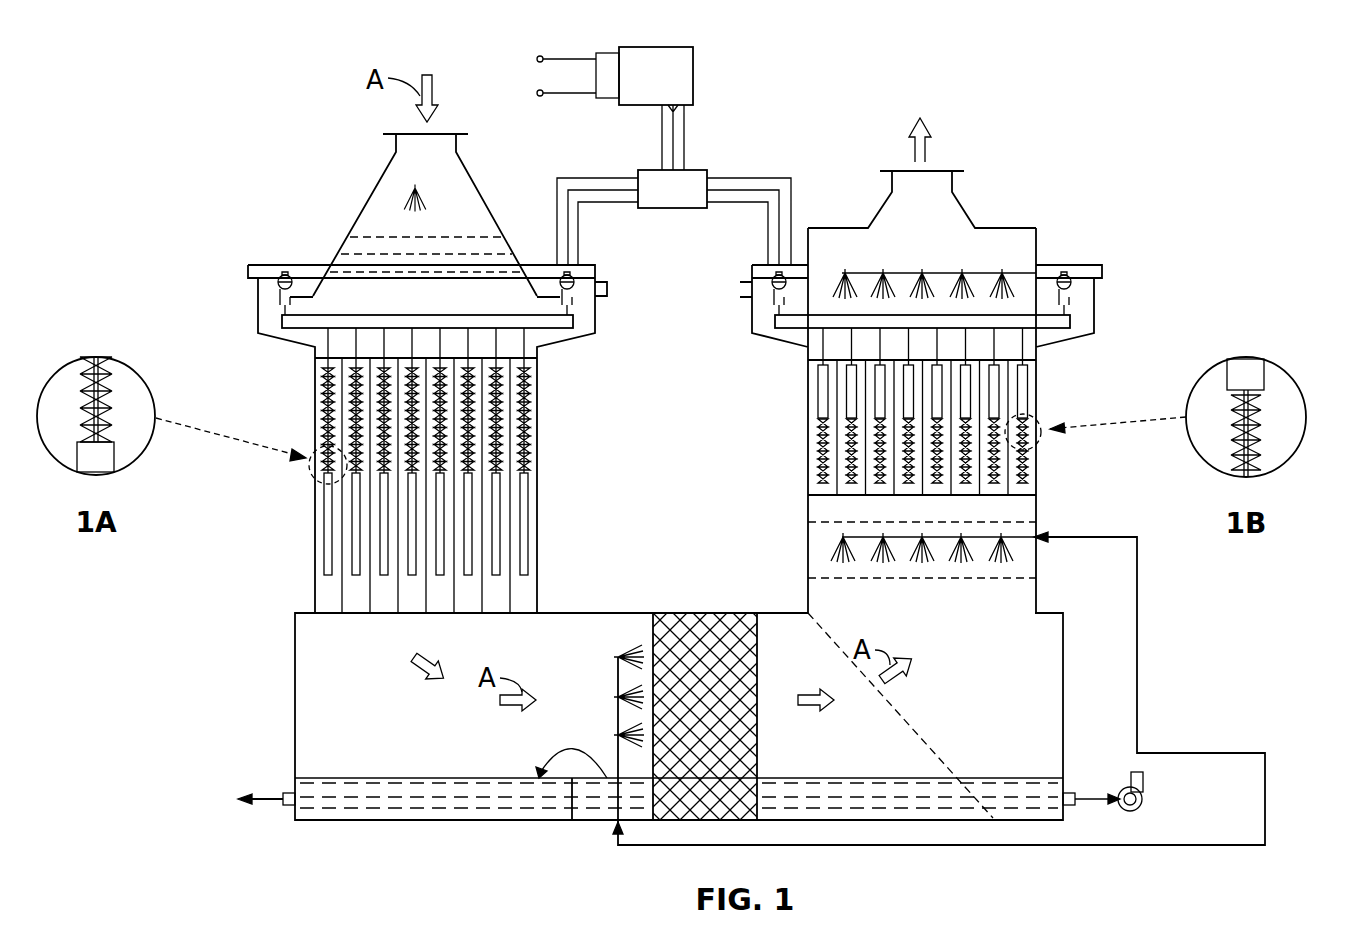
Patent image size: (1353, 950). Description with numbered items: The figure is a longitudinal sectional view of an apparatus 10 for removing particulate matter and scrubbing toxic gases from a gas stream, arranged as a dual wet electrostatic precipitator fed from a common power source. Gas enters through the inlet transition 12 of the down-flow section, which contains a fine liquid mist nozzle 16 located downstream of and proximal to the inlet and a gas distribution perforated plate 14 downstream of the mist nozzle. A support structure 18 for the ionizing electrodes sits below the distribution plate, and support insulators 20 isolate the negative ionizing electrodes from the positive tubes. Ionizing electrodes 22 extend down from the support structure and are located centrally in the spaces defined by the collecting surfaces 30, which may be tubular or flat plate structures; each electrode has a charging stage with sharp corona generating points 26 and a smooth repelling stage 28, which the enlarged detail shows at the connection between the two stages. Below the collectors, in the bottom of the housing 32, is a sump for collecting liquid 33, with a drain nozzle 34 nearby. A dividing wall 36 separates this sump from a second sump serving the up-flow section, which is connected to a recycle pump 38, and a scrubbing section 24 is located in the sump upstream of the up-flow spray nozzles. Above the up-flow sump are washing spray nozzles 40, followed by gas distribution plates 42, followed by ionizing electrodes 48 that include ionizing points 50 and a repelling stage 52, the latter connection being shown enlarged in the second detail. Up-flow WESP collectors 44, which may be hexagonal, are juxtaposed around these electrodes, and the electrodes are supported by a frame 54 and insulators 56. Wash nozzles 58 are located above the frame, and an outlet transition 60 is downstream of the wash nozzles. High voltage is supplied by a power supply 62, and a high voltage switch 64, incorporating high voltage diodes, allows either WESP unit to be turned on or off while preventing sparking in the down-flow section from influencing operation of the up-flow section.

In FIG. 1, the apparatus 10 is at (185, 94).
In FIG. 1, the inlet transition 12 is at (466, 192).
In FIG. 1, the gas distribution perforated plate 14 is at (350, 237).
In FIG. 1, the fine liquid mist nozzle 16 is at (410, 210).
In FIG. 1, the support structure 18 is at (565, 322).
In FIG. 1, the support insulators 20 is at (278, 283).
In FIG. 1, the ionizing electrodes 22 is at (357, 397).
In FIG. 1, the scrubbing section 24 is at (708, 820).
In FIG. 1A, the sharp corona generating points 26 is at (112, 387).
In FIG. 1, the smooth repelling stage 28 is at (323, 497).
In FIG. 1A, the smooth repelling stage 28 is at (107, 455).
In FIG. 1, the collecting surfaces 30 is at (312, 553).
In FIG. 1, the housing 32 is at (293, 697).
In FIG. 1, the liquid 33 is at (402, 808).
In FIG. 1, the drain nozzle 34 is at (293, 795).
In FIG. 1, the dividing wall 36 is at (570, 808).
In FIG. 1, the recycle pump 38 is at (1143, 798).
In FIG. 1, the washing spray nozzles 40 is at (1012, 552).
In FIG. 1, the gas distribution plates 42 is at (1026, 522).
In FIG. 1, the up-flow WESP collectors 44 is at (808, 384).
In FIG. 1, the ionizing electrodes 48 is at (876, 425).
In FIG. 1B, the ionizing points 50 is at (1256, 418).
In FIG. 1, the repelling stage 52 is at (998, 390).
In FIG. 1B, the repelling stage 52 is at (1257, 375).
In FIG. 1, the frame 54 is at (1068, 322).
In FIG. 1, the insulators 56 is at (773, 283).
In FIG. 1, the wash nozzles 58 is at (945, 272).
In FIG. 1, the outlet transition 60 is at (957, 170).
In FIG. 1, the power supply 62 is at (694, 76).
In FIG. 1, the high voltage switch 64 is at (673, 210).